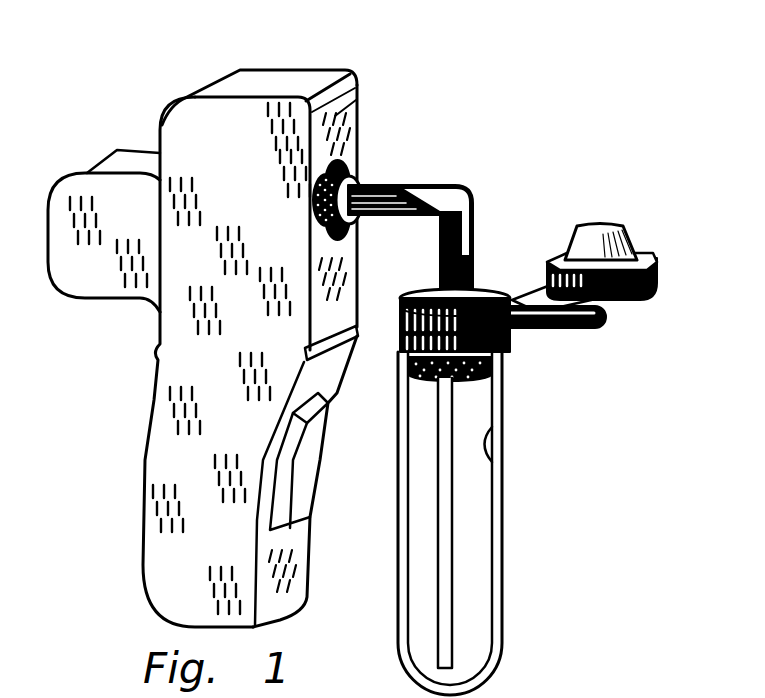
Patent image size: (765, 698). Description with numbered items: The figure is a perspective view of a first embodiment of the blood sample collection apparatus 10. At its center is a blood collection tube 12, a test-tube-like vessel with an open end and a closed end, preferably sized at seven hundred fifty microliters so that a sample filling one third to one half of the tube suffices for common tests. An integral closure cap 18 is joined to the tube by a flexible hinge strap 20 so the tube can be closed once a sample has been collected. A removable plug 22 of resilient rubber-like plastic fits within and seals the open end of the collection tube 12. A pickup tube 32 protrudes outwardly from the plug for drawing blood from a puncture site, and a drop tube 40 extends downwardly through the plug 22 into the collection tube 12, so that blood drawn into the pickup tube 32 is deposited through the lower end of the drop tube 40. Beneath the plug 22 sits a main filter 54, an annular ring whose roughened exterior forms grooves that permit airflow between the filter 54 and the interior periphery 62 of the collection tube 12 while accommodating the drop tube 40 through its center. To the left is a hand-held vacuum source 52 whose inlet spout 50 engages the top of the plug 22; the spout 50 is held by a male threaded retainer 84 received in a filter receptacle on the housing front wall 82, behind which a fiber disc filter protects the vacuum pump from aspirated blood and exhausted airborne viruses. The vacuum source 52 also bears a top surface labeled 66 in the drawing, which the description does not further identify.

The blood sample collection apparatus 10 is at (480, 60).
The blood collection tube 12 is at (503, 550).
The closure cap 18 is at (653, 288).
The flexible hinge strap 20 is at (547, 297).
The removable plug 22 is at (478, 283).
The pickup tube 32 is at (582, 330).
The drop tube 40 is at (453, 624).
The inlet spout 50 is at (407, 193).
The hand-held vacuum source 52 is at (265, 50).
The main filter 54 is at (490, 365).
The interior periphery 62 is at (493, 424).
The top wall 66 is at (272, 76).
The housing front wall 82 is at (340, 108).
The male threaded retainer 84 is at (345, 178).